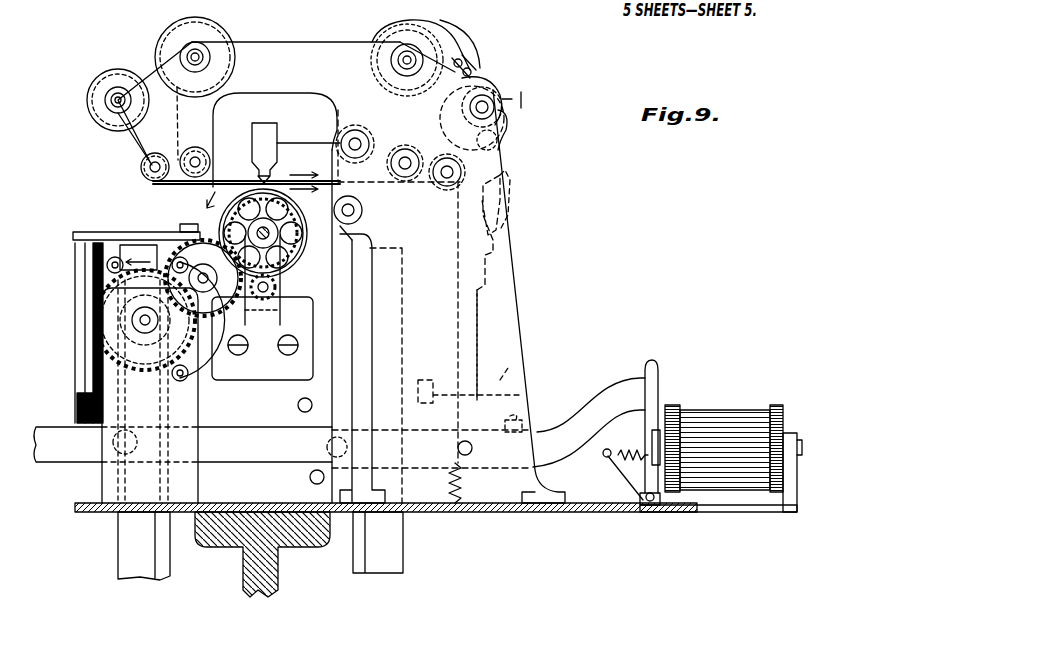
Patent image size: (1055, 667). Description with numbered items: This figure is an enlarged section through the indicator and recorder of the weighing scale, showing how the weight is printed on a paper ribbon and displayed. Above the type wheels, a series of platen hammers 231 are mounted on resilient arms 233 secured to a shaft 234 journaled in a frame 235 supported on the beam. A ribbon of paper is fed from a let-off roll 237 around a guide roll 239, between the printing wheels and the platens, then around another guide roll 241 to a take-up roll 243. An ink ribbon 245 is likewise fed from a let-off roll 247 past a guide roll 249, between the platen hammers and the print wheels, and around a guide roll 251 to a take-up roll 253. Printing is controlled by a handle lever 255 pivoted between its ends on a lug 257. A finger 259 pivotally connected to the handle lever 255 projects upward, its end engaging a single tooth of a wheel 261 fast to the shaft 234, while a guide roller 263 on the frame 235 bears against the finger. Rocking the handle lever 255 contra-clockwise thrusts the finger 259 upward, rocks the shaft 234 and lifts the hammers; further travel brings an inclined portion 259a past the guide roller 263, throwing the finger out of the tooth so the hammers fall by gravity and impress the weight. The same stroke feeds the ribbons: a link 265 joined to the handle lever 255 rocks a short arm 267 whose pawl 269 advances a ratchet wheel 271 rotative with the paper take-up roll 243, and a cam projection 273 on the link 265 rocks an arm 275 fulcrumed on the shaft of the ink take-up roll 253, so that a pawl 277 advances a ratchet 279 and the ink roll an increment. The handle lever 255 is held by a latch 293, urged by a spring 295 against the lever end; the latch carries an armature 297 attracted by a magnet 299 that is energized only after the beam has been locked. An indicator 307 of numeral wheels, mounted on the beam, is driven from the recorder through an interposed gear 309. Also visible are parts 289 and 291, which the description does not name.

The platen hammers 231 is at (263, 132).
The resilient arms 233 is at (308, 154).
The shaft 234 is at (356, 131).
The frame 235 is at (302, 50).
The let-off roll 237 is at (226, 30).
The guide roll 239 is at (192, 147).
The guide roll 241 is at (400, 155).
The take-up roll 243 is at (387, 40).
The ink ribbon 245 is at (122, 136).
The let-off roll 247 is at (94, 110).
The guide roll 249 is at (141, 178).
The guide roll 251 is at (443, 158).
The take-up roll 253 is at (484, 88).
The handle lever 255 is at (52, 432).
The lug 257 is at (102, 478).
The finger 259 is at (345, 380).
The inclined portion 259a is at (358, 230).
The wheel 261 is at (334, 134).
The guide roller 263 is at (362, 210).
The link 265 is at (470, 348).
The short arm 267 is at (463, 62).
The pawl 269 is at (446, 28).
The ratchet wheel 271 is at (378, 50).
The cam projection 273 is at (503, 252).
The arm 275 is at (500, 189).
The pawl 277 is at (505, 122).
The ratchet 279 is at (512, 99).
The latch 289 is at (525, 420).
The link 291 is at (522, 398).
The latch 293 is at (656, 372).
The spring 295 is at (620, 452).
The armature 297 is at (657, 456).
The magnet 299 is at (717, 412).
The indicator 307 is at (100, 342).
The gear 309 is at (182, 248).